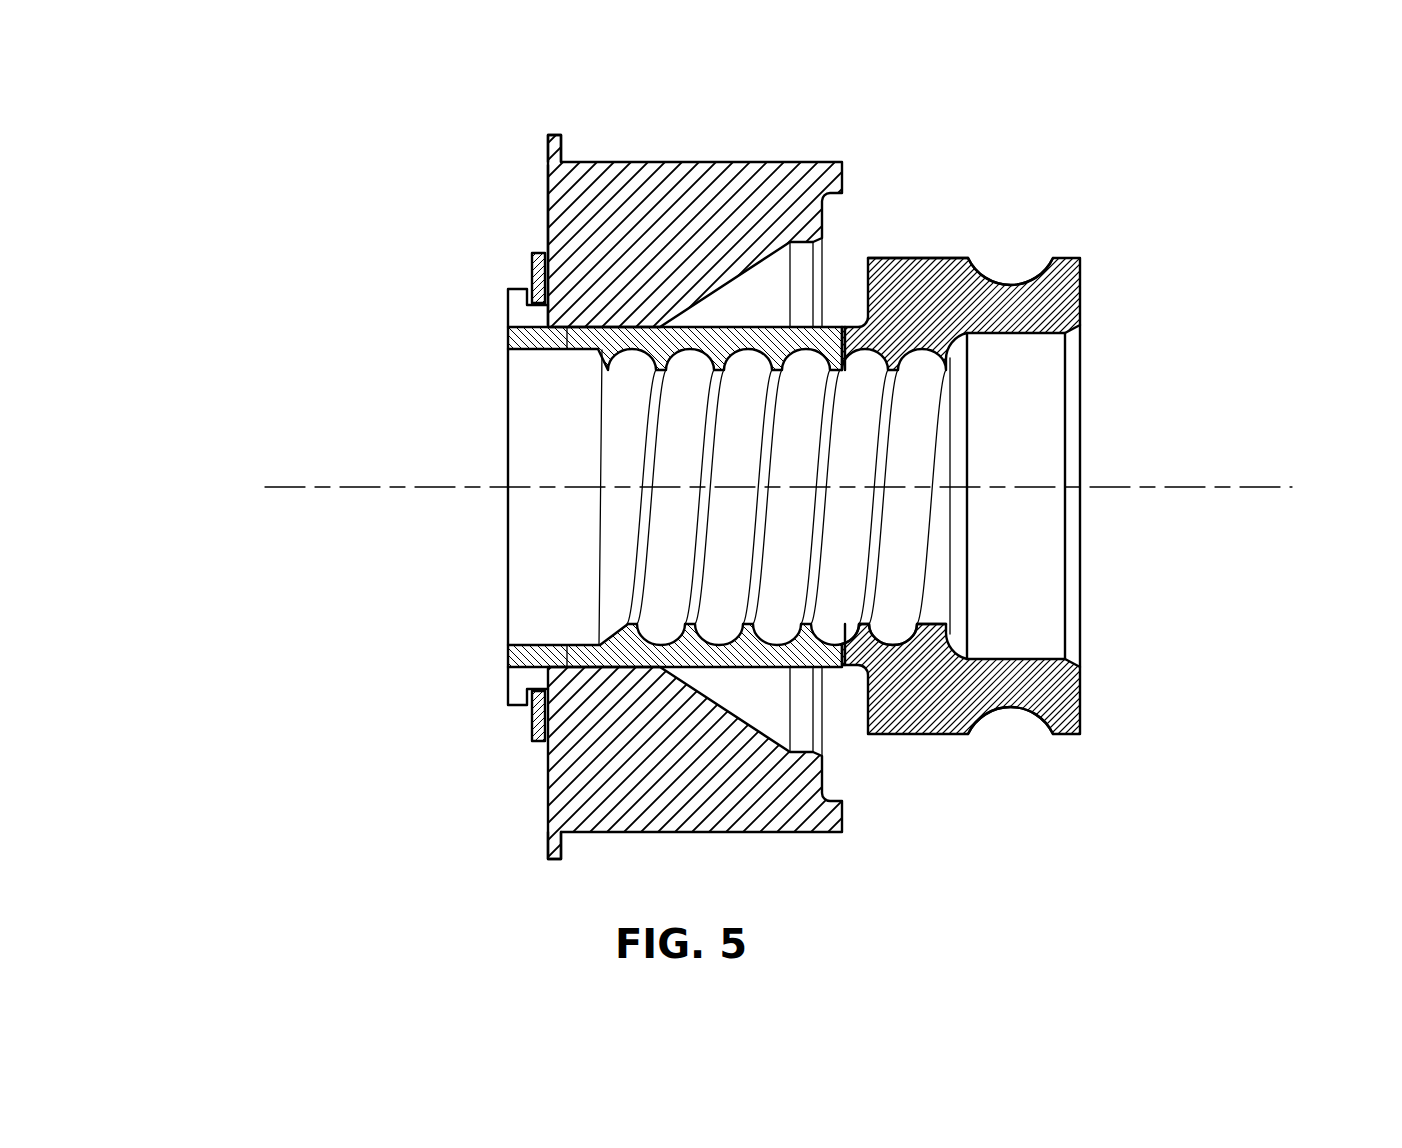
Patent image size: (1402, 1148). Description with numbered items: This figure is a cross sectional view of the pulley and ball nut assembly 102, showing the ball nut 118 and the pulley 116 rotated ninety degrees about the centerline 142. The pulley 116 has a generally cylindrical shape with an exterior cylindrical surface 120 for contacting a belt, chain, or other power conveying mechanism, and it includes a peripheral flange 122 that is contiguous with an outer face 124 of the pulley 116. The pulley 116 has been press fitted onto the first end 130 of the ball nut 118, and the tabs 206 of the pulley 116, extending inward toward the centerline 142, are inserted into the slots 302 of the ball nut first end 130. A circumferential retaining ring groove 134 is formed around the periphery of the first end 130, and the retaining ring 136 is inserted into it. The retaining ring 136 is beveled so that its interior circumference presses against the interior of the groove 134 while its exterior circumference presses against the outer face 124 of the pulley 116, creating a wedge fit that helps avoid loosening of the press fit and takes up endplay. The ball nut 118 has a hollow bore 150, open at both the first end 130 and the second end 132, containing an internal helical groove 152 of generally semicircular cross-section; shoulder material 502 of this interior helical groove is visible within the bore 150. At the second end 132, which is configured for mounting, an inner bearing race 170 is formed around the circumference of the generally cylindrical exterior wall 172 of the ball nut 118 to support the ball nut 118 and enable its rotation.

The pulley and ball nut assembly 102 is at (703, 449).
The pulley 116 is at (679, 462).
The ball nut 118 is at (899, 744).
The exterior cylindrical surface 120 is at (726, 161).
The peripheral flange 122 is at (549, 136).
The outer face 124 is at (547, 186).
The first end 130 is at (572, 478).
The second end 132 is at (1030, 487).
The retaining ring groove 134 is at (527, 299).
The retaining ring 136 is at (533, 253).
The centerline 142 is at (1237, 487).
The hollow bore 150 is at (537, 436).
The internal helical groove 152 is at (887, 641).
The inner bearing race 170 is at (1020, 284).
The cylindrical exterior wall 172 is at (921, 257).
The tabs 206 is at (567, 350).
The slots 302 is at (529, 329).
The shoulder material 502 is at (632, 542).